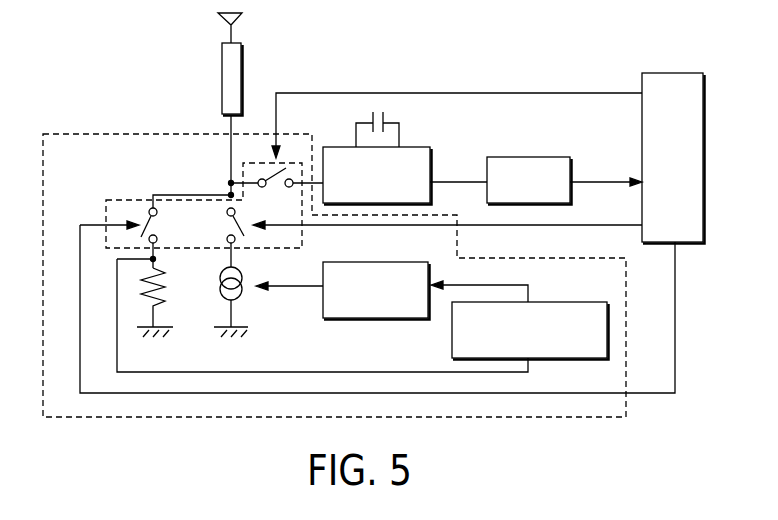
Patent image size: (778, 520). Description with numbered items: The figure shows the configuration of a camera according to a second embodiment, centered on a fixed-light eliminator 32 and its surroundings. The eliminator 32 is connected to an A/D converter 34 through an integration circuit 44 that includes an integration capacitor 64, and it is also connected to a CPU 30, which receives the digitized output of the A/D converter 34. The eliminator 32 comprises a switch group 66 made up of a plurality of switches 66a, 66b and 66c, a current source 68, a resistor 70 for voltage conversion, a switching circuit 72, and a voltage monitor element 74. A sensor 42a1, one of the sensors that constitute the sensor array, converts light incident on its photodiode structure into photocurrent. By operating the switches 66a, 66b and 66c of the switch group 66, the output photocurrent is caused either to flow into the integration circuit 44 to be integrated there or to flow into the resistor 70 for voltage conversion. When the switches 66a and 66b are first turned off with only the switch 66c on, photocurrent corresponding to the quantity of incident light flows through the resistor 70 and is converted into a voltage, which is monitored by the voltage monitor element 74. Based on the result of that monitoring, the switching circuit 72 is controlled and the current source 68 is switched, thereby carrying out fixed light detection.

The CPU 30 is at (682, 73).
The fixed-light eliminator 32 is at (111, 133).
The A/D converter 34 is at (535, 157).
The sensor 42a1 is at (242, 60).
The integration circuit 44 is at (405, 147).
The integration capacitor 64 is at (392, 117).
The switch group 66 is at (100, 213).
The switch 66a is at (274, 187).
The switch 66b is at (225, 225).
The switch 66c is at (144, 211).
The current source 68 is at (248, 290).
The resistor for voltage conversion 70 is at (170, 290).
The switching circuit 72 is at (385, 262).
The voltage monitor element 74 is at (552, 302).